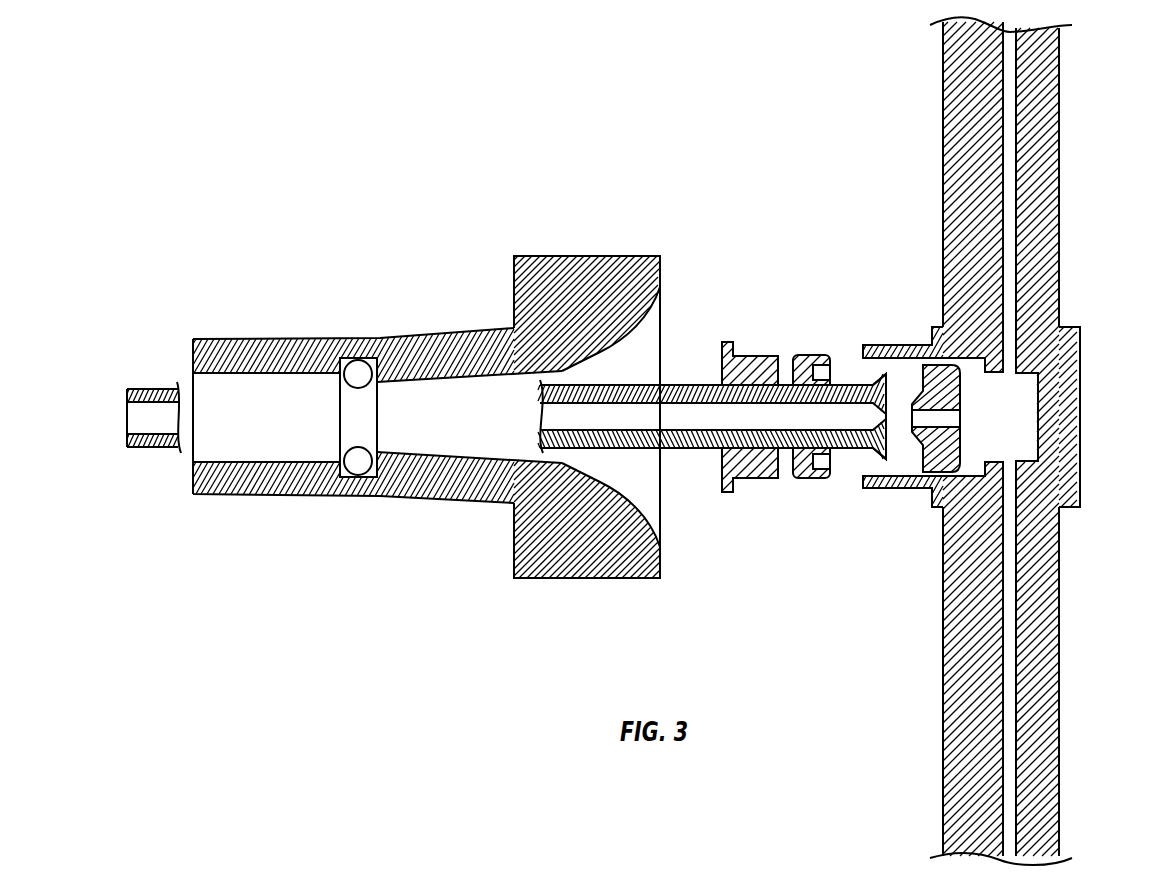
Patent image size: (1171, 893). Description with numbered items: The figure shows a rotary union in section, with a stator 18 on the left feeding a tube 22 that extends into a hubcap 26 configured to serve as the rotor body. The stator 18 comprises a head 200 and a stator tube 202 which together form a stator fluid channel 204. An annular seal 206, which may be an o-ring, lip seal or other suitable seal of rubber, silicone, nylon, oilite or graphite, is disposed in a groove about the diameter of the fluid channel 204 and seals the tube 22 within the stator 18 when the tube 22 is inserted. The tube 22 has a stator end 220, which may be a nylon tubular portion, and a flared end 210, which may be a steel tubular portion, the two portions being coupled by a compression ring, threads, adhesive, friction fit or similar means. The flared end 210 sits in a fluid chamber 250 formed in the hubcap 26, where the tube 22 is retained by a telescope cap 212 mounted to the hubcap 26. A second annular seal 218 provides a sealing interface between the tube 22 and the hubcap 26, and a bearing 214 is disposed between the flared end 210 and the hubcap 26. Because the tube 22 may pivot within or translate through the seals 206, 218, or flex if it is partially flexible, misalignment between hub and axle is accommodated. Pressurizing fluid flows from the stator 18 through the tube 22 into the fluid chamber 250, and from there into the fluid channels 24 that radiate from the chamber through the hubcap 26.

The stator 18 is at (470, 300).
The tube 22 is at (656, 446).
The fluid channels 24 is at (1008, 133).
The hubcap 26 is at (1060, 762).
The head 200 is at (660, 274).
The stator tube 202 is at (254, 340).
The stator fluid channel 204 is at (293, 443).
The annular seal 206 is at (356, 345).
The flared end 210 is at (888, 418).
The telescope cap 212 is at (745, 478).
The bearing 214 is at (963, 392).
The annular seal 218 is at (809, 478).
The stator end 220 is at (128, 447).
The fluid chamber 250 is at (1027, 389).